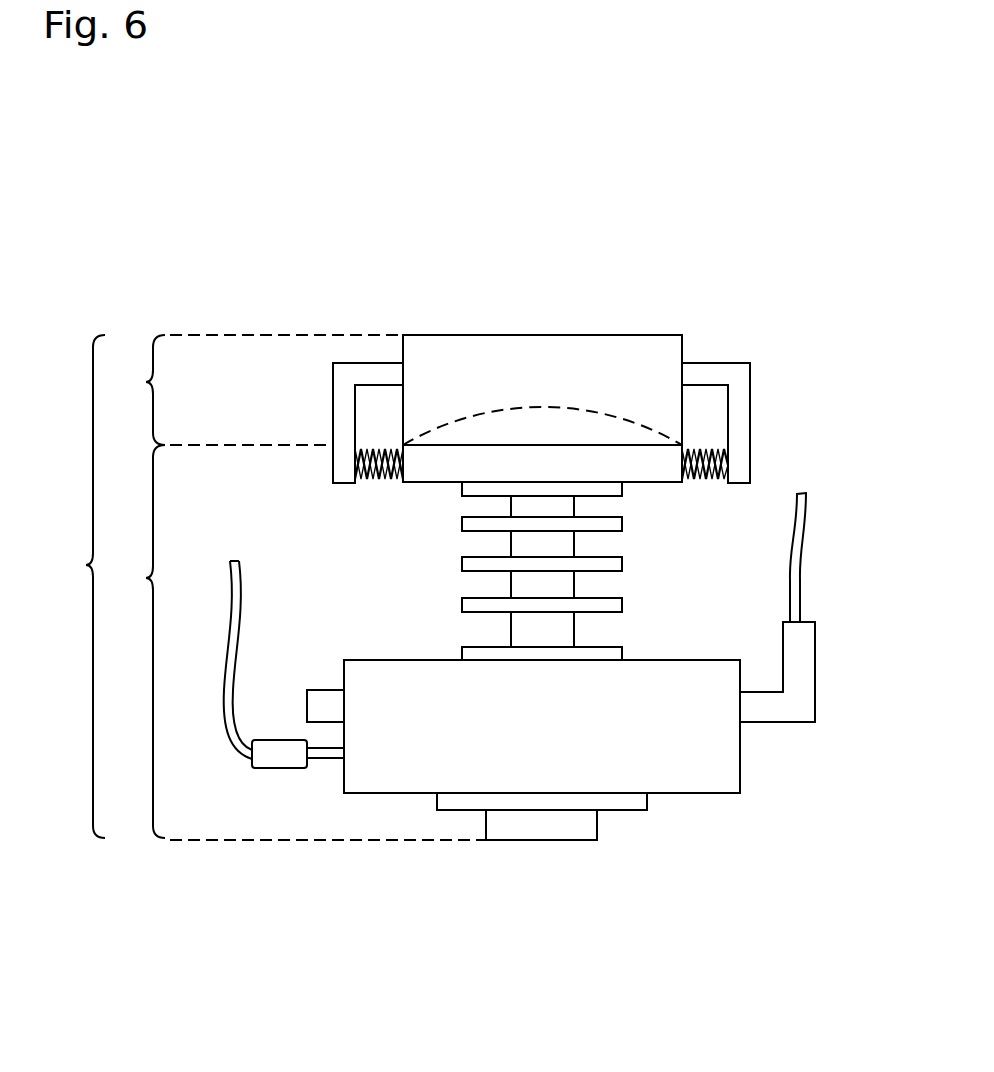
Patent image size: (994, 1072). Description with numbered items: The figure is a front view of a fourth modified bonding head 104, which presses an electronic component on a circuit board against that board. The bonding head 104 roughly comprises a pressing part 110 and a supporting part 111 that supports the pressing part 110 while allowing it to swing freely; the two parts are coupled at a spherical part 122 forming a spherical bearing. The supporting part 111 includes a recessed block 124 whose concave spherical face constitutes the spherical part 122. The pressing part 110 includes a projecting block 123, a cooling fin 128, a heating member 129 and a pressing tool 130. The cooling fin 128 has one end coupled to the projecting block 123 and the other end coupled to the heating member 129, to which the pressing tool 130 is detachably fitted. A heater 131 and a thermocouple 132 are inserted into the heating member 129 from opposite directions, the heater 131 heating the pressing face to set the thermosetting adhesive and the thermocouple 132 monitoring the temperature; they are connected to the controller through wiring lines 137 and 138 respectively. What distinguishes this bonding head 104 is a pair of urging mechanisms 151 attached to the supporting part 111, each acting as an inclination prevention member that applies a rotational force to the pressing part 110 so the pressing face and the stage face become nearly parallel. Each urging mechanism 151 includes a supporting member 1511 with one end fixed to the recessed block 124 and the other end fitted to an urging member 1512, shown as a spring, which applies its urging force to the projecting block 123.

The bonding head 104 is at (69, 586).
The pressing part 110 is at (133, 641).
The supporting part 111 is at (133, 390).
The spherical part 122 is at (598, 408).
The projecting block 123 is at (430, 470).
The recessed block 124 is at (441, 358).
The cooling fin 128 is at (622, 524).
The heating member 129 is at (385, 763).
The pressing tool 130 is at (588, 826).
The heater 131 is at (800, 700).
The thermocouple 132 is at (327, 760).
The wiring line 137 is at (810, 530).
The wiring line 138 is at (227, 588).
The urging mechanism 151 is at (312, 467).
The supporting member 1511 is at (357, 372).
The urging member 1512 is at (392, 447).